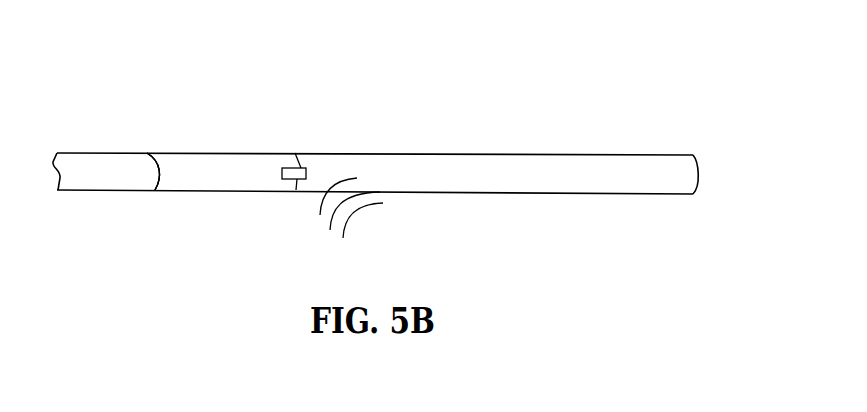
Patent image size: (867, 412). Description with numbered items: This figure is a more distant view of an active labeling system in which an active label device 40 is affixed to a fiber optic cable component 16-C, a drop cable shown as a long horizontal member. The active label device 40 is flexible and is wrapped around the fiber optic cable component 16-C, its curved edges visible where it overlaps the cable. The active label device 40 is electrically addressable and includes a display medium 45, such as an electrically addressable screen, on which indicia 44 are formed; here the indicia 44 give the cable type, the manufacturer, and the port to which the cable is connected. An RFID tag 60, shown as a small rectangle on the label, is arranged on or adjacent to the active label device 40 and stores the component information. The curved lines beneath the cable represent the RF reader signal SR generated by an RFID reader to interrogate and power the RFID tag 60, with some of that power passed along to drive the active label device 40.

The fiber optic cable component 16-C is at (455, 153).
The active label device 40 is at (222, 138).
The indicia 44 is at (176, 173).
The display medium 45 is at (174, 166).
The RFID tag 60 is at (307, 168).
The RF reader signal SR is at (317, 226).